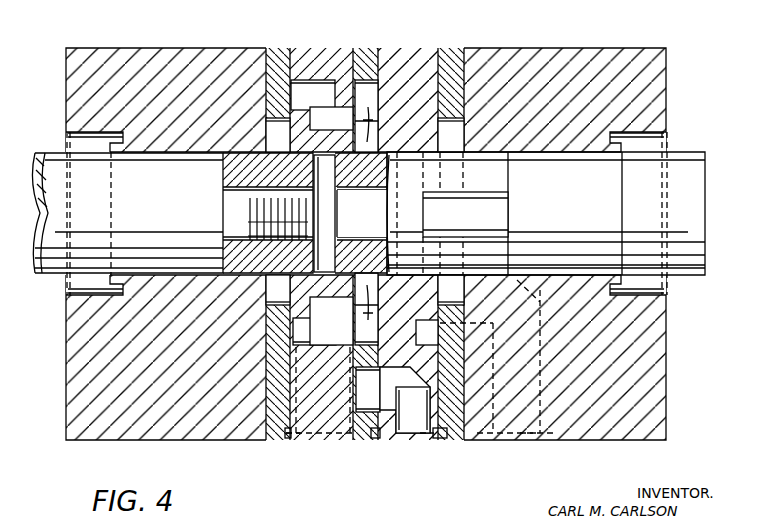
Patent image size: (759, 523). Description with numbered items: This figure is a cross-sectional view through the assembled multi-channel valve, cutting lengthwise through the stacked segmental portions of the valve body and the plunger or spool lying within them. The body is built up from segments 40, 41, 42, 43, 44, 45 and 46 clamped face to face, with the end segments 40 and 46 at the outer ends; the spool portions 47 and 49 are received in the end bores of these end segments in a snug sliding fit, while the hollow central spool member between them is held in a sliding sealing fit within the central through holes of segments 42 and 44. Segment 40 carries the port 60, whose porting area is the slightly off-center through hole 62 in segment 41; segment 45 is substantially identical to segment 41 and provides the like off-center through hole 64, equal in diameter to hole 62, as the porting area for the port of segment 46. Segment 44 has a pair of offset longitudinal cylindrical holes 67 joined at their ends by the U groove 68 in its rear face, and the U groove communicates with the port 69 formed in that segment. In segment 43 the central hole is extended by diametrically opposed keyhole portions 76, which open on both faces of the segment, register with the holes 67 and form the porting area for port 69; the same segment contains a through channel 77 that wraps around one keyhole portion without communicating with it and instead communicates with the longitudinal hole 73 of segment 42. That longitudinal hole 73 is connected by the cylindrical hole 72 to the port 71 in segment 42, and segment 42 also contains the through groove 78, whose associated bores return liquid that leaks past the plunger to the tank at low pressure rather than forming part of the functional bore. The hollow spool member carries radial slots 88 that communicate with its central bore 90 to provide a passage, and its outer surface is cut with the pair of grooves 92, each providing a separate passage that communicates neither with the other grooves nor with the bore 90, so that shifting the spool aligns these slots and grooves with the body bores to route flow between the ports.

The segment 40 is at (579, 50).
The segment 41 is at (455, 50).
The segment 42 is at (401, 50).
The segment 43 is at (361, 50).
The segment 44 is at (325, 50).
The segment 45 is at (278, 50).
The segment 46 is at (235, 50).
The plunger or spool portion 47 is at (688, 153).
The plunger or spool portion 49 is at (55, 152).
The port 60 is at (528, 440).
The through hole 62 is at (451, 211).
The through hole 64 is at (278, 211).
The longitudinal cylindrical holes 67 is at (331, 226).
The U groove 68 is at (313, 212).
The port 69 is at (318, 440).
The port 71 is at (426, 440).
The cylindrical hole 72 is at (413, 410).
The longitudinal hole 73 is at (405, 400).
The keyhole portions 76 is at (366, 212).
The through channel 77 is at (368, 389).
The groove 78 is at (427, 332).
The radial slots 88 is at (324, 213).
The central bore 90 is at (362, 213).
The grooves 92 is at (465, 214).